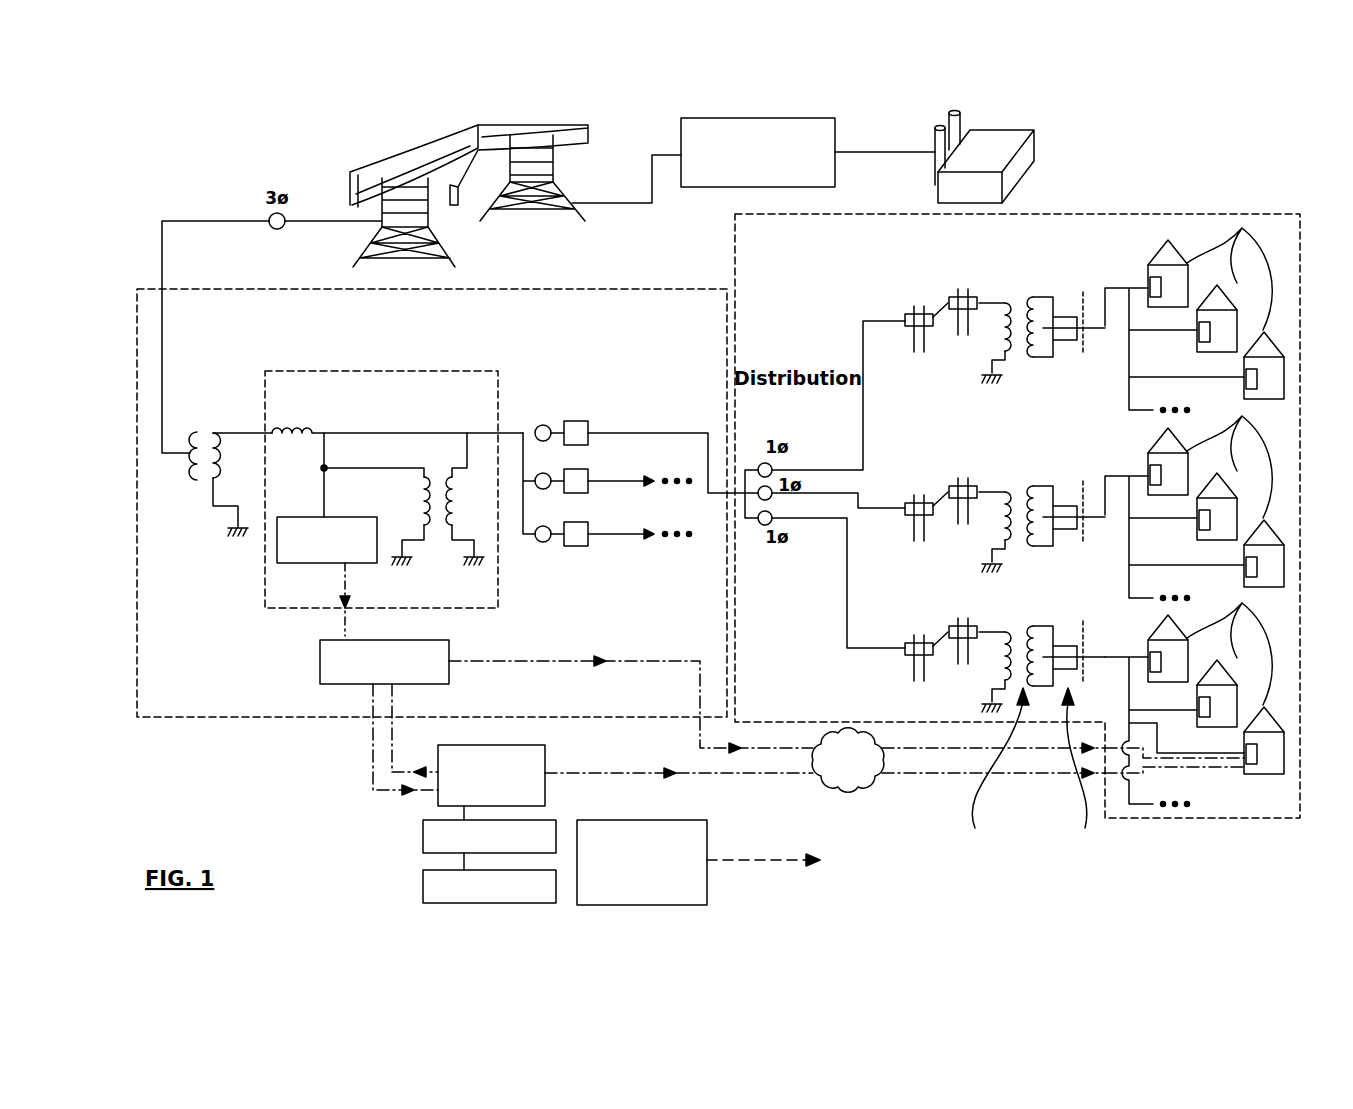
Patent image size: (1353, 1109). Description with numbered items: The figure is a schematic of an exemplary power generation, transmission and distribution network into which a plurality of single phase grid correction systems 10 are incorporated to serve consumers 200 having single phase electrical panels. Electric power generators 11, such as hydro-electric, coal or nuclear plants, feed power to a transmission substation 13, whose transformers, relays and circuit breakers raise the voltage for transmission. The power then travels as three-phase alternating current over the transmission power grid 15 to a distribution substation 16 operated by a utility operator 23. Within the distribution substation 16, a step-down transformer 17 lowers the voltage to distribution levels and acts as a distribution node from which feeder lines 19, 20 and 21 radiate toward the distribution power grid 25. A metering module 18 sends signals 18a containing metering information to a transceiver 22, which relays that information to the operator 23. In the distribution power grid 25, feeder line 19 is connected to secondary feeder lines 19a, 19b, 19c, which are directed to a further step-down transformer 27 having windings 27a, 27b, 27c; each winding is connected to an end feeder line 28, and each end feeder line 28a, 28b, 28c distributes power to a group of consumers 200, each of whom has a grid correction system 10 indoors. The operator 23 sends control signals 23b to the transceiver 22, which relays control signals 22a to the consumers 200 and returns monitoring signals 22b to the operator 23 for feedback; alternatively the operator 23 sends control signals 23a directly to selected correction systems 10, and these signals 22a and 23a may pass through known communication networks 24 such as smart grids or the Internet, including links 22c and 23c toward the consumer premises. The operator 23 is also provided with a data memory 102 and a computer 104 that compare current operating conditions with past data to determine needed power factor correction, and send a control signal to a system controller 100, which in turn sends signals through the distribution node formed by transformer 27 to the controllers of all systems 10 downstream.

The single phase grid correction system 10 is at (1148, 287).
The electric power generators 11 is at (1022, 180).
The transmission substation 13 is at (707, 187).
The transmission power grid 15 is at (398, 152).
The distribution substation 16 is at (612, 288).
The step-down transformer 17 is at (203, 478).
The metering module 18 is at (350, 371).
The signals 18a is at (345, 632).
The feeder line 19 is at (663, 432).
The secondary feeder line 19a is at (830, 470).
The secondary feeder line 19b is at (862, 500).
The secondary feeder line 19c is at (847, 555).
The feeder line 20 is at (635, 481).
The feeder line 21 is at (615, 534).
The transceiver 22 is at (320, 660).
The control signals 22a is at (560, 661).
The monitoring signals 22b is at (373, 745).
The communication link to premises 22c is at (930, 748).
The utility operator 23 is at (545, 763).
The control signals 23a is at (655, 773).
The control signals 23b is at (392, 690).
The communication link to premises 23c is at (1028, 773).
The communication networks 24 is at (878, 784).
The distribution power grid 25 is at (1218, 213).
The step-down transformer 27 is at (996, 770).
The winding 27a is at (1025, 295).
The winding 27b is at (1023, 484).
The winding 27c is at (1020, 640).
The end feeder line 28 is at (1079, 770).
The end feeder line 28a is at (1098, 305).
The end feeder line 28b is at (1098, 485).
The end feeder line 28c is at (1098, 645).
The system controller 100 is at (694, 820).
The data memory 102 is at (423, 888).
The computer 104 is at (423, 838).
The consumers 200 is at (1219, 494).